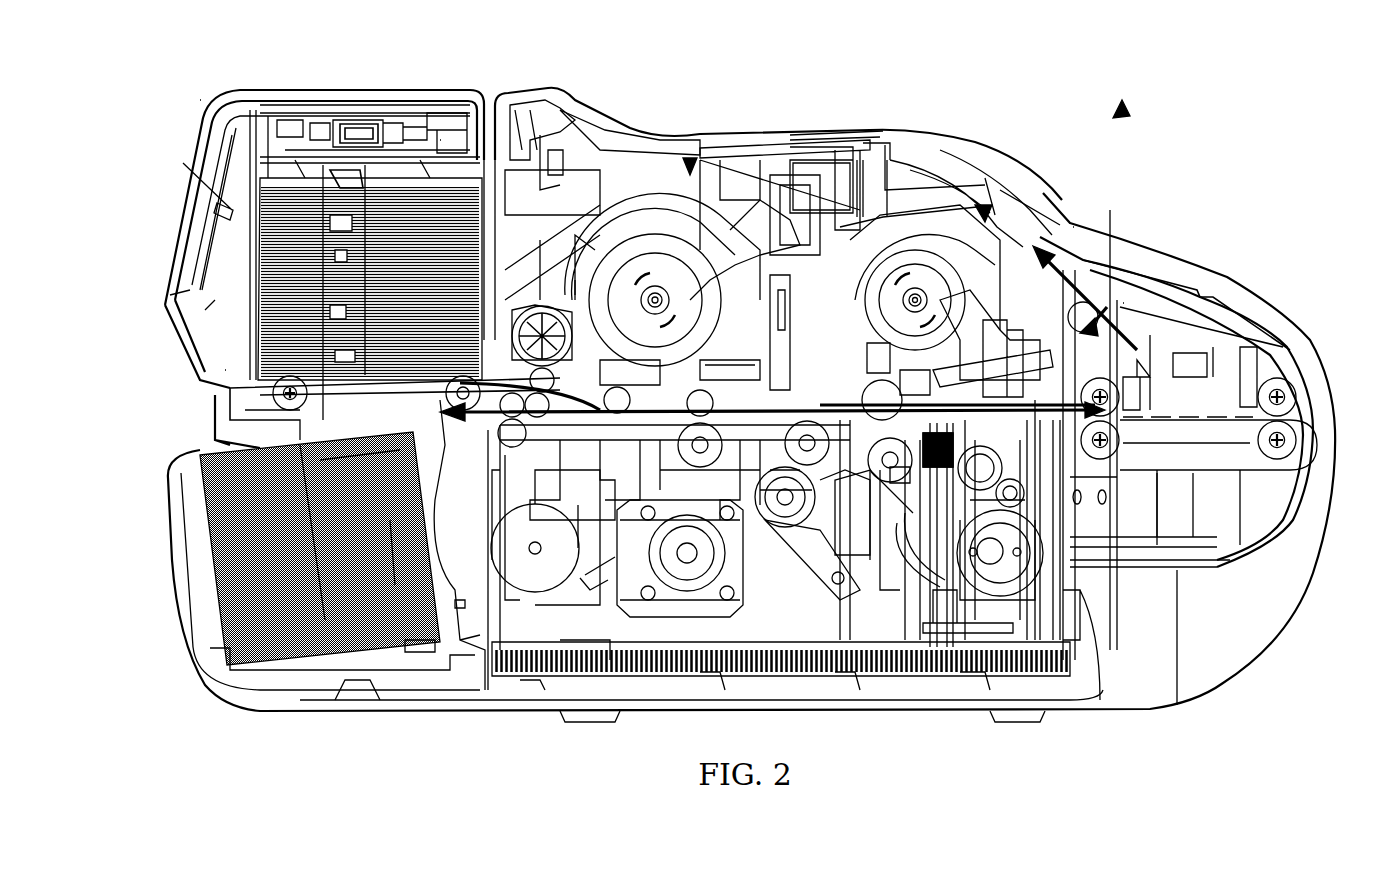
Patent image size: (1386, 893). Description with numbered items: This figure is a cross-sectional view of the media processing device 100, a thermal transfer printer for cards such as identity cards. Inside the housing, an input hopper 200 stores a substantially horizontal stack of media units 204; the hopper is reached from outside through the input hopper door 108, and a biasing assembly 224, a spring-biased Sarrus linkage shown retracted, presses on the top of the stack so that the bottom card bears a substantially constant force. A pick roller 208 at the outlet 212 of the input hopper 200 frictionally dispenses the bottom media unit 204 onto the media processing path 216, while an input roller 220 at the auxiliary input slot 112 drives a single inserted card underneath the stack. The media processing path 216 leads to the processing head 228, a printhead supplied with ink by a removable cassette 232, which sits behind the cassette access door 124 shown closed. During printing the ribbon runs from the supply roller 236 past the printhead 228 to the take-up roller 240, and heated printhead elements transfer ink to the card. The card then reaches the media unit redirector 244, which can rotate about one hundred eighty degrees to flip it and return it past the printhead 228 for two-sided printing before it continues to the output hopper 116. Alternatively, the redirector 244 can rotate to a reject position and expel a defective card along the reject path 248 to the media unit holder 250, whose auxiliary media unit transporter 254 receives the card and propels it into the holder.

The media processing device 100 is at (1120, 112).
The input hopper door 108 is at (240, 110).
The auxiliary input slot 112 is at (225, 370).
The output hopper 116 is at (228, 592).
The cassette access door 124 is at (793, 132).
The input hopper 200 is at (385, 178).
The media units 204 is at (262, 258).
The pick roller 208 is at (503, 440).
The outlet 212 is at (505, 260).
The media processing path 216 is at (640, 405).
The input roller 220 is at (282, 395).
The biasing assembly 224 is at (444, 148).
The processing head 228 is at (880, 450).
The cassette 232 is at (690, 160).
The supply roller 236 is at (652, 248).
The take-up roller 240 is at (918, 255).
The media unit redirector 244 is at (1203, 455).
The reject path 248 is at (1073, 227).
The media unit holder 250 is at (983, 205).
The auxiliary media unit transporter 254 is at (1123, 303).